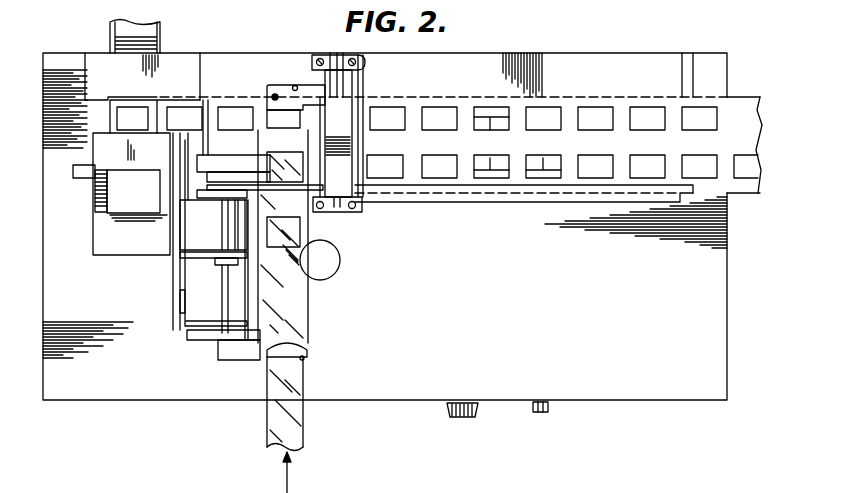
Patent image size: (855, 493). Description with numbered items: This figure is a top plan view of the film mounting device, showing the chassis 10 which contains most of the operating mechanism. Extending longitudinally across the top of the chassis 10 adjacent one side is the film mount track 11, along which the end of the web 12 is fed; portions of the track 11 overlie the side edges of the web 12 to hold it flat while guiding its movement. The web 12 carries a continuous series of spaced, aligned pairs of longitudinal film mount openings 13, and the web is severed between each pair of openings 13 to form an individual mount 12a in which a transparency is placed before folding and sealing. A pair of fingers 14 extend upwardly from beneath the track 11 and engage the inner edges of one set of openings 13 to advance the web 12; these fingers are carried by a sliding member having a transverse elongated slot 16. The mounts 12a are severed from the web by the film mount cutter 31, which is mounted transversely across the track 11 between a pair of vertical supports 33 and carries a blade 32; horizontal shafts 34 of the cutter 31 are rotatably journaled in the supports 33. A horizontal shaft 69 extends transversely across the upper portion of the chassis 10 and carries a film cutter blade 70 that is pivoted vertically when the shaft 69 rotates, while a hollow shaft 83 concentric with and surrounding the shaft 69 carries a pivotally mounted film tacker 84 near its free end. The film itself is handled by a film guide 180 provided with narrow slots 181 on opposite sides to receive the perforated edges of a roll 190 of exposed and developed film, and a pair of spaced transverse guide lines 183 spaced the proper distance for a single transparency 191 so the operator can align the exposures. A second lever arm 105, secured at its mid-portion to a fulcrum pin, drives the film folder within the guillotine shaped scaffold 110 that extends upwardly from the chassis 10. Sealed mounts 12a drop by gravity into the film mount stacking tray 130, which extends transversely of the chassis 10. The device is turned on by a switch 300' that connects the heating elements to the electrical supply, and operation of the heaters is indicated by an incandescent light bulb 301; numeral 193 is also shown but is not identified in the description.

The chassis 10 is at (385, 226).
The film mount track 11 is at (418, 198).
The web 12 is at (436, 152).
The individual mount 12a is at (192, 133).
The film mount openings 13 is at (543, 122).
The fingers 14 is at (490, 112).
The transverse elongated slot 16 is at (214, 272).
The film mount cutter 31 is at (333, 108).
The blade 32 is at (360, 93).
The vertical supports 33 is at (365, 62).
The horizontal shafts 34 is at (341, 53).
The horizontal shaft 69 is at (185, 323).
The film cutter blade 70 is at (285, 207).
The hollow shaft 83 is at (223, 232).
The film tacker 84 is at (238, 163).
The second lever arm 105 is at (180, 273).
The guillotine shaped scaffold 110 is at (90, 162).
The film mount stacking tray 130 is at (160, 28).
The film guide 180 is at (308, 320).
The narrow slots 181 is at (307, 358).
The guide lines 183 is at (340, 243).
The film roll 190 is at (305, 387).
The transparency 191 is at (283, 165).
The element 193 is at (674, 486).
The switch 300' is at (563, 418).
The incandescent light bulb 301 is at (457, 417).